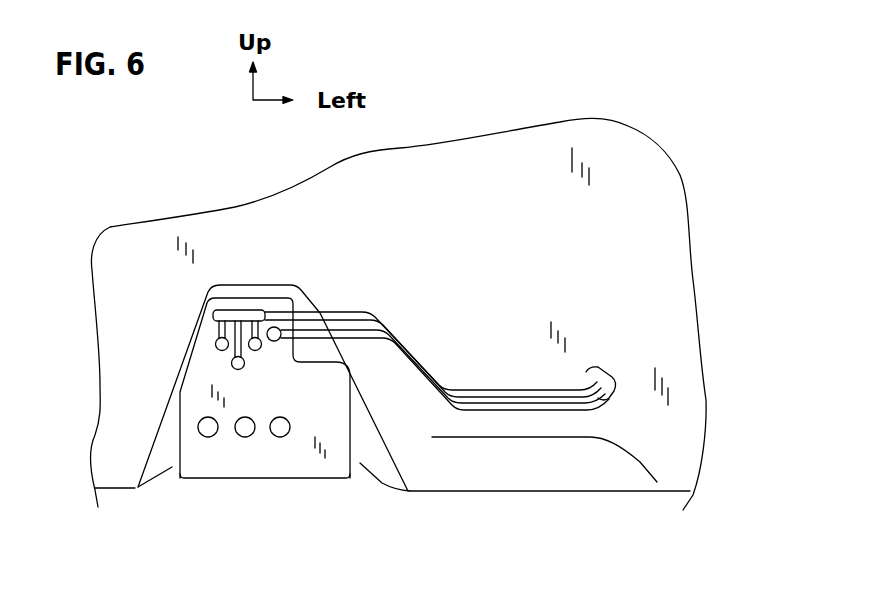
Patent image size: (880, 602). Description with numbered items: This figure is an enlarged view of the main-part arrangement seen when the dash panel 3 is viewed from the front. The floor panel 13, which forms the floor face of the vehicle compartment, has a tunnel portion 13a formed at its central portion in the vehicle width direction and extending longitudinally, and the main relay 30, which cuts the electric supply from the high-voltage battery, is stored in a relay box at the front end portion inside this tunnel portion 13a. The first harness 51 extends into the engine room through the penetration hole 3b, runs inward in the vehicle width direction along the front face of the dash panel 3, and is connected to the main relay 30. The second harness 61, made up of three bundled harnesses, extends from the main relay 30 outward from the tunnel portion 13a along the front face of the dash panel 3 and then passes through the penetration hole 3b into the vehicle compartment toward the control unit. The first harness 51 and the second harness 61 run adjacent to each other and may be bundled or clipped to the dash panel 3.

The dash panel 3 is at (486, 155).
The penetration hole 3b is at (610, 370).
The floor panel 13 is at (595, 495).
The tunnel portion 13a is at (297, 287).
The main relay 30 is at (290, 462).
The first harness 51 is at (500, 410).
The second harness 61 is at (412, 352).